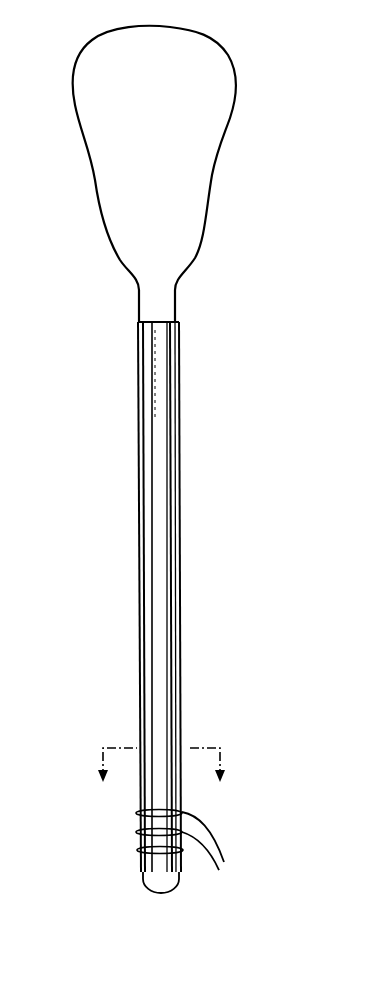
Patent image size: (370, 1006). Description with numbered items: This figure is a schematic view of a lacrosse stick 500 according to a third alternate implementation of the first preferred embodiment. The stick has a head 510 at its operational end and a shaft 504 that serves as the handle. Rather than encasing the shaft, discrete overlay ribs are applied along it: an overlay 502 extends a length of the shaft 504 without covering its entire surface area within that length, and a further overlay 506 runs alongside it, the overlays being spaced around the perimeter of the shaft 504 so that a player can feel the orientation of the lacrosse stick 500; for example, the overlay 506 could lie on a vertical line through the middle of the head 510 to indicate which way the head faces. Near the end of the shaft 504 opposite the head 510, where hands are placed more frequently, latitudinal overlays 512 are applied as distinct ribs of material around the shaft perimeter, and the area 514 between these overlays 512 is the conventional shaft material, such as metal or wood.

The lacrosse stick 500 is at (122, 282).
The head 510 is at (205, 37).
The overlay 502 is at (177, 353).
The overlay 506 is at (148, 373).
The area 514 is at (138, 840).
The overlays 512 is at (221, 871).
The shaft 504 is at (160, 893).